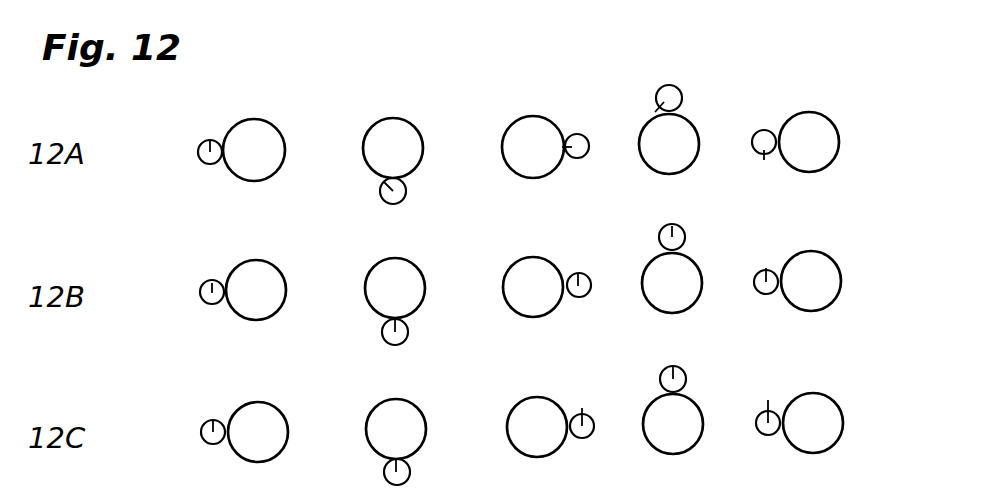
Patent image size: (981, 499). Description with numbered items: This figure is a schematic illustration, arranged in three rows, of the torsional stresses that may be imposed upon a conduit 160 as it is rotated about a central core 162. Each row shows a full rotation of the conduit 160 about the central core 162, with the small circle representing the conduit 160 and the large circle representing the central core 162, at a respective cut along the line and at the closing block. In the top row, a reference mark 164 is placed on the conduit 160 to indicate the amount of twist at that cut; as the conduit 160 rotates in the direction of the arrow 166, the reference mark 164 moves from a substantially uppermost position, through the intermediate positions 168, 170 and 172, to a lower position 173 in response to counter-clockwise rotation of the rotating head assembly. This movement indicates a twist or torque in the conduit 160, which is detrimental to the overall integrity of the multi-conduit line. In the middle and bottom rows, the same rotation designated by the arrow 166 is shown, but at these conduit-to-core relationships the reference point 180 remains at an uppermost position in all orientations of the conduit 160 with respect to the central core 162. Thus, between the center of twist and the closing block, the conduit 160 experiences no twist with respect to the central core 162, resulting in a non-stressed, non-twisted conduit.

The conduit 160 is at (199, 148).
The central core 162 is at (263, 121).
The reference mark 164 is at (210, 141).
The arrow 166 is at (214, 93).
The roller in lower position 168 is at (385, 184).
The roller in side position 170 is at (564, 147).
The roller in upper position 172 is at (656, 112).
The lower position 173 is at (764, 161).
The reference point 180 is at (212, 284).